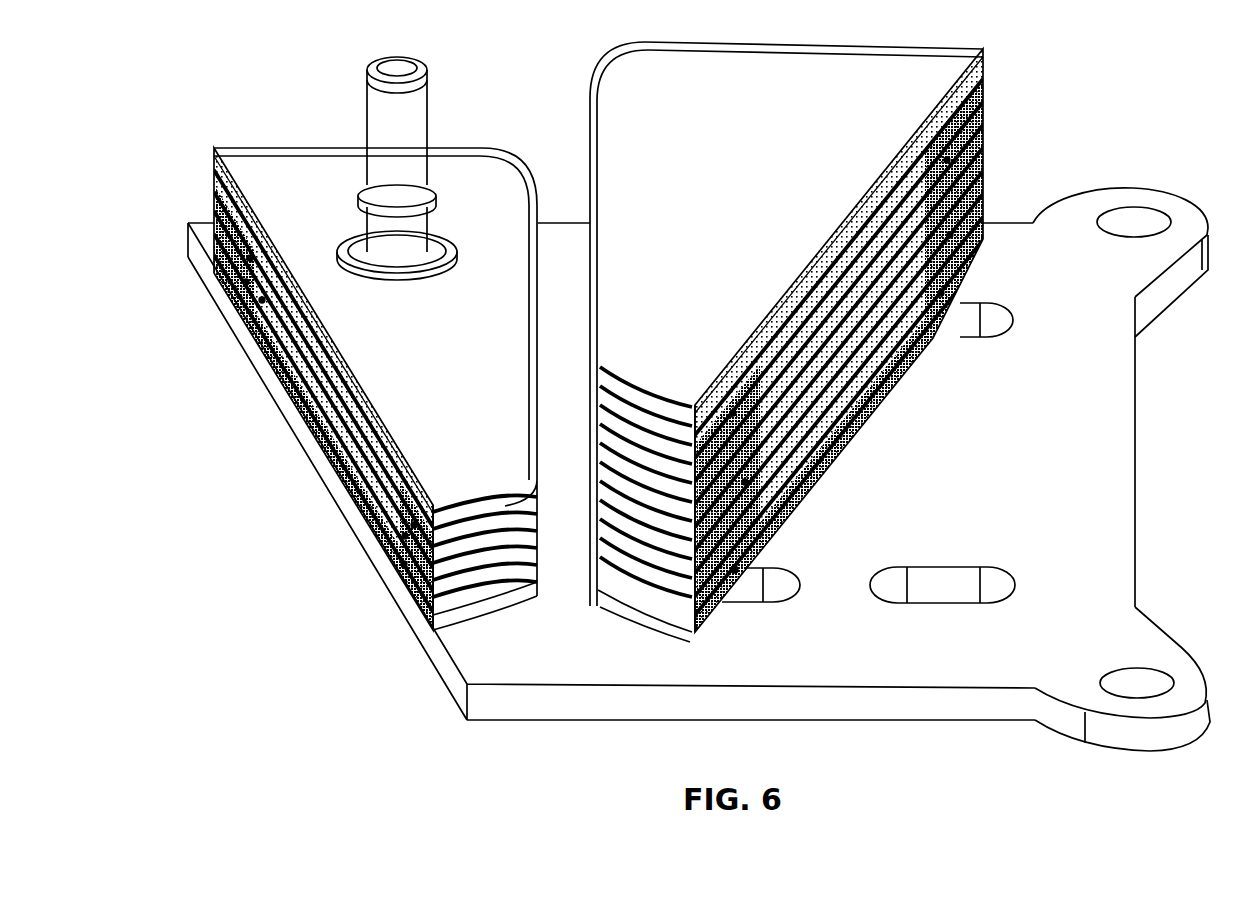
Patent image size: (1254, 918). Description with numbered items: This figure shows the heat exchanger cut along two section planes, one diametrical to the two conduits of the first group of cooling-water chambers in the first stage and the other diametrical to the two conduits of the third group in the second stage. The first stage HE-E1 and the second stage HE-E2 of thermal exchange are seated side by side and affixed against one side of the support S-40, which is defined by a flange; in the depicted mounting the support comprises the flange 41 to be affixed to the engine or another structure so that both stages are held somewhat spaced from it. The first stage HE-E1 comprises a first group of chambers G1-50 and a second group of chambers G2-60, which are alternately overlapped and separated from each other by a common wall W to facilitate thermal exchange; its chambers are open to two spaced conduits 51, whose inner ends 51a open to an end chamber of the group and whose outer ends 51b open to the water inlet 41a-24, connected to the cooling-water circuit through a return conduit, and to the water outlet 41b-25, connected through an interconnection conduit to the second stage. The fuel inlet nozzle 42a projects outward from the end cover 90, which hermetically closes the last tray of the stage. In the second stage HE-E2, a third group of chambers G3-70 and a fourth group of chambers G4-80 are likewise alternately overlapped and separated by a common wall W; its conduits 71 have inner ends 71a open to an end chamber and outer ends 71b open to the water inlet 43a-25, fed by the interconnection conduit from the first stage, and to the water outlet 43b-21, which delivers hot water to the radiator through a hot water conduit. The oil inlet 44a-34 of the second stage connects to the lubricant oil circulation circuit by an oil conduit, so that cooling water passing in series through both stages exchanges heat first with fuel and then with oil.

The first stage of thermal exchange HE-E1 is at (268, 128).
The second stage of thermal exchange HE-E2 is at (582, 95).
The fuel inlet nozzle 42a is at (368, 117).
The end cover 90 is at (478, 197).
The conduits of the first group of chambers 51 is at (237, 292).
The inner ends of the conduits 51a is at (252, 256).
The outer ends of the conduits 51b is at (233, 318).
The first group of chambers G1-50 is at (335, 389).
The second group of chambers G2-60 is at (325, 392).
The common wall W is at (312, 445).
The water inlet and return conduit 41a-24 is at (240, 347).
The water outlet and interconnection conduit 41b-25 is at (403, 618).
The flange 41 is at (620, 670).
The conduits of the third group of chambers 71 is at (988, 223).
The inner ends of the conduits 71a is at (945, 160).
The outer ends of the conduits 71b is at (941, 295).
The third group of chambers G3-70 is at (879, 340).
The fourth group of chambers G4-80 is at (810, 335).
The water outlet and hot water conduit 43b-21 is at (990, 338).
The water inlet and interconnection conduit 43a-25 is at (764, 590).
The oil inlet and oil conduit 44a-34 is at (937, 598).
The support flange S-40 is at (1132, 178).